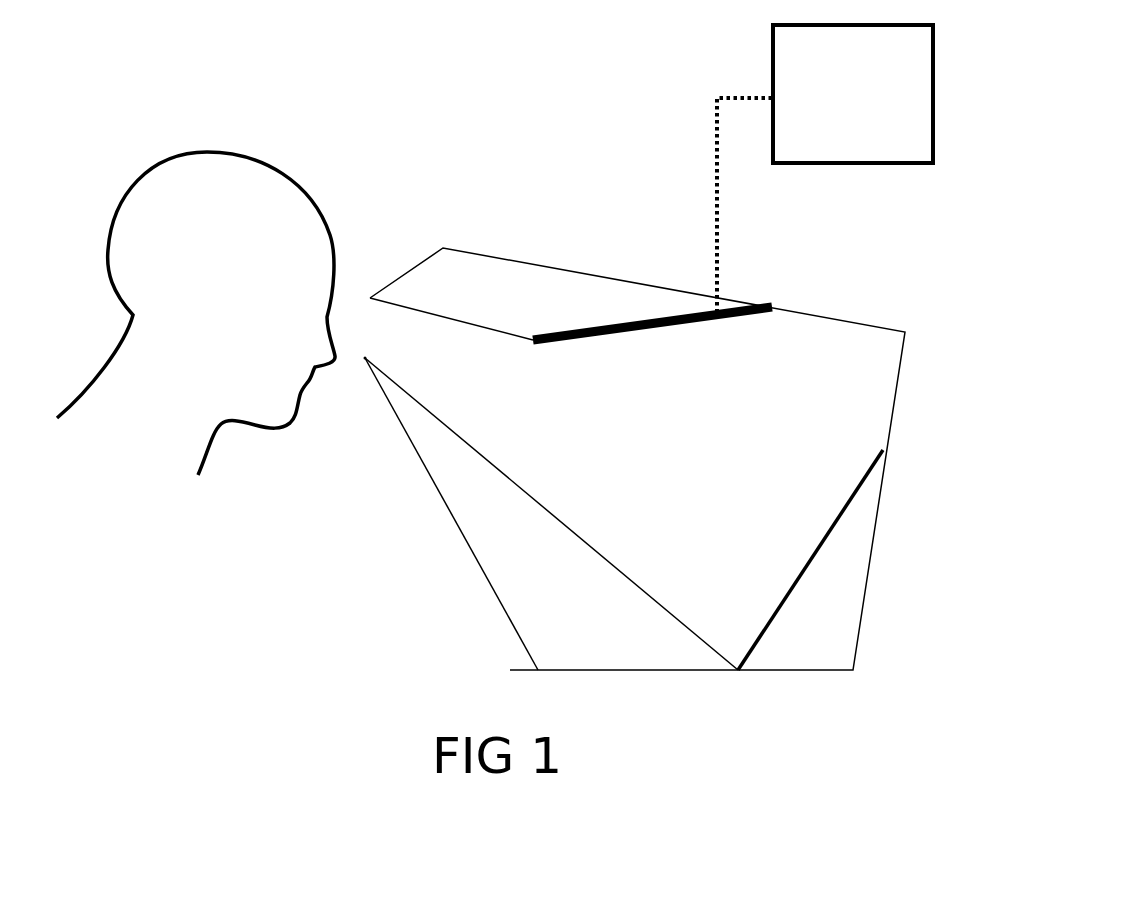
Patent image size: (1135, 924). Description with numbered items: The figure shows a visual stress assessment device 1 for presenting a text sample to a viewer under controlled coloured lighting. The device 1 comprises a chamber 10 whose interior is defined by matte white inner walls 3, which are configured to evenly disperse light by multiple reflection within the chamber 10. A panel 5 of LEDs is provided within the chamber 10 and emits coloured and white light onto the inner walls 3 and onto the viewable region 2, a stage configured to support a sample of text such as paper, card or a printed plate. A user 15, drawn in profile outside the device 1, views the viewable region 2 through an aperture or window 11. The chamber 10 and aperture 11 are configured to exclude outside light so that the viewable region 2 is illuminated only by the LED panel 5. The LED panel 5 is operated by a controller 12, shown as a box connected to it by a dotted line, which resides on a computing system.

The visual stress assessment device 1 is at (395, 68).
The viewable region 2 is at (850, 505).
The inner walls 3 is at (403, 310).
The panel 5 is at (618, 323).
The chamber 10 is at (868, 407).
The aperture 11 is at (362, 340).
The controller 12 is at (872, 106).
The user 15 is at (184, 131).